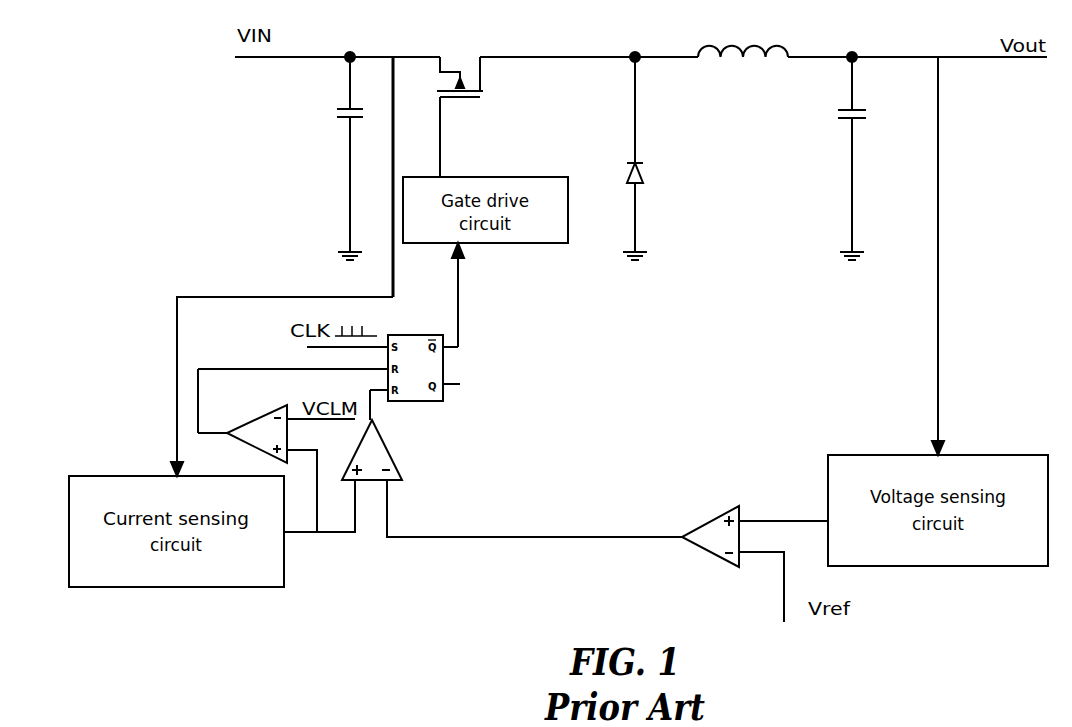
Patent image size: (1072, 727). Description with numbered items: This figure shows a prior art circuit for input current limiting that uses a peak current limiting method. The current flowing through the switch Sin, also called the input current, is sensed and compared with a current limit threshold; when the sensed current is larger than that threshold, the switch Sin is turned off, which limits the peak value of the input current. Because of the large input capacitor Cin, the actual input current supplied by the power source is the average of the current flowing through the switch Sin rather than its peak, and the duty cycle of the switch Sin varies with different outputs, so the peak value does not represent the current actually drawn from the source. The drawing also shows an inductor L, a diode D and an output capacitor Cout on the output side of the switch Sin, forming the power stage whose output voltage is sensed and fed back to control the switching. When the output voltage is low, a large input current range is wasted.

The switch Sin is at (460, 100).
The input capacitor Cin is at (335, 158).
The inductor L is at (743, 70).
The diode D is at (616, 158).
The output capacitor Cout is at (880, 158).